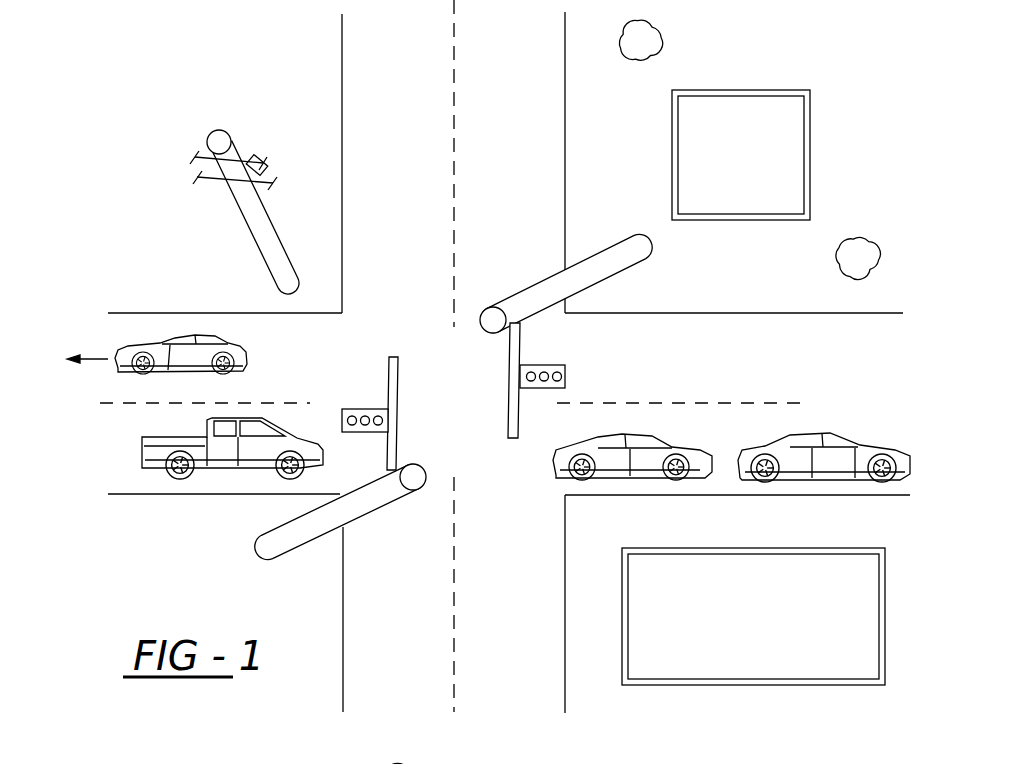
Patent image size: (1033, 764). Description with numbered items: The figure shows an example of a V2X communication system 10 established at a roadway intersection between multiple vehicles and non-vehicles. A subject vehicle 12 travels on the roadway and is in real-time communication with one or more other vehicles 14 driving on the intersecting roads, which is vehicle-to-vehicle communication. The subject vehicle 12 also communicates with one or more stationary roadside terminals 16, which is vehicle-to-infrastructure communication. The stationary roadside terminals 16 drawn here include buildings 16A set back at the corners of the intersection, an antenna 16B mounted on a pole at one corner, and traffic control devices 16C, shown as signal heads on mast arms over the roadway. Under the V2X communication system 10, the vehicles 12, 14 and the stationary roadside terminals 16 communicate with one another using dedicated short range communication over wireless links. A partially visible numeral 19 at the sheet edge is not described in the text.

The V2X communication system 10 is at (130, 87).
The subject vehicle 12 is at (632, 437).
The other vehicles 14 is at (192, 338).
The stationary roadside terminals 16 is at (298, 59).
The buildings 16A is at (737, 90).
The antennas 16B is at (222, 130).
The traffic control devices 16C is at (508, 362).
The controller 19 is at (364, 757).